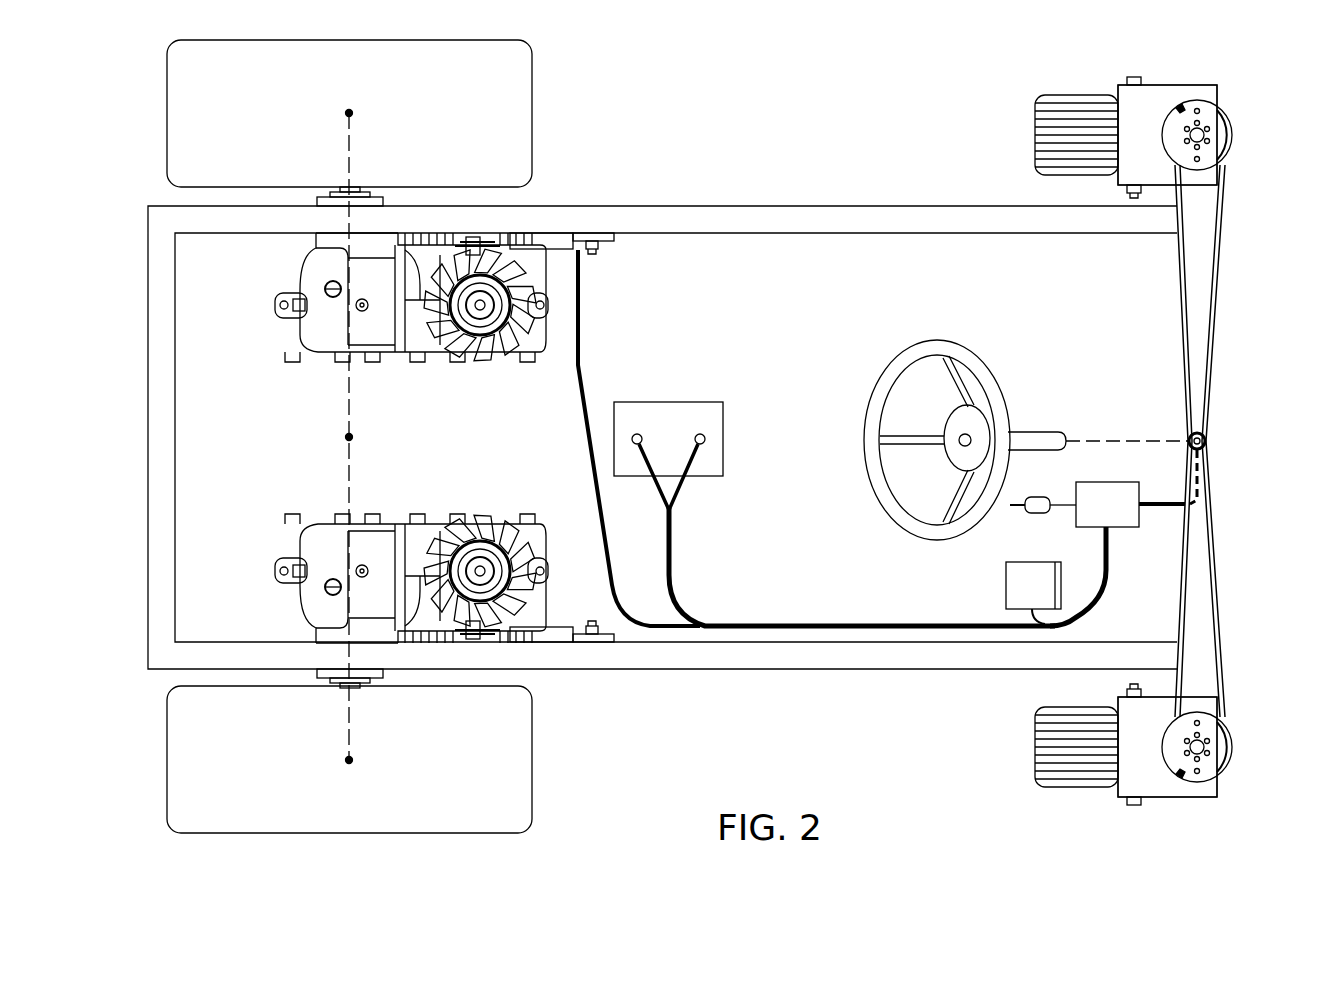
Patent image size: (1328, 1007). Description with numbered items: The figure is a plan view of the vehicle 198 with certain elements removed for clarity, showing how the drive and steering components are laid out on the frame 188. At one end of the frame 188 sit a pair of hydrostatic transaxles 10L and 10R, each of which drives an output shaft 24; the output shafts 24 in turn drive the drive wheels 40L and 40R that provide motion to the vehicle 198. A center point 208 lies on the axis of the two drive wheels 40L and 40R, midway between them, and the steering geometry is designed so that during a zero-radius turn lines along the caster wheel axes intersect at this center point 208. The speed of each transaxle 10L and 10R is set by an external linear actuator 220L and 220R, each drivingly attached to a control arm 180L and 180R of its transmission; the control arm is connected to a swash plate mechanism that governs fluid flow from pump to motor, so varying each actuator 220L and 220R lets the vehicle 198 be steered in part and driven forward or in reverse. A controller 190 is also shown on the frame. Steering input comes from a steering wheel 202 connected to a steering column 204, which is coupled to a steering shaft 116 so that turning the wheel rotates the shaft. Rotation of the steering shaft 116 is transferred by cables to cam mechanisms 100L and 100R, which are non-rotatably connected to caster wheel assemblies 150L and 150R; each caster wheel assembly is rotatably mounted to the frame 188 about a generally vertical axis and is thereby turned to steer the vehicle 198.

The transaxle 10L is at (268, 350).
The transaxle 10R is at (270, 523).
The output shaft 24 is at (348, 192).
The drive wheel 40L is at (372, 82).
The drive wheel 40R is at (372, 820).
The cam mechanism 100L is at (1243, 103).
The cam mechanism 100R is at (1240, 780).
The steering shaft 116 is at (1205, 438).
The caster wheel assembly 150L is at (1160, 74).
The caster wheel assembly 150R is at (1160, 812).
The control arm 180L is at (472, 236).
The control arm 180R is at (468, 641).
The frame 188 is at (667, 206).
The controller 190 is at (1025, 584).
The vehicle 198 is at (848, 102).
The steering wheel 202 is at (882, 388).
The steering column 204 is at (1035, 436).
The center point 208 is at (352, 436).
The actuator 220L is at (546, 240).
The actuator 220R is at (546, 638).